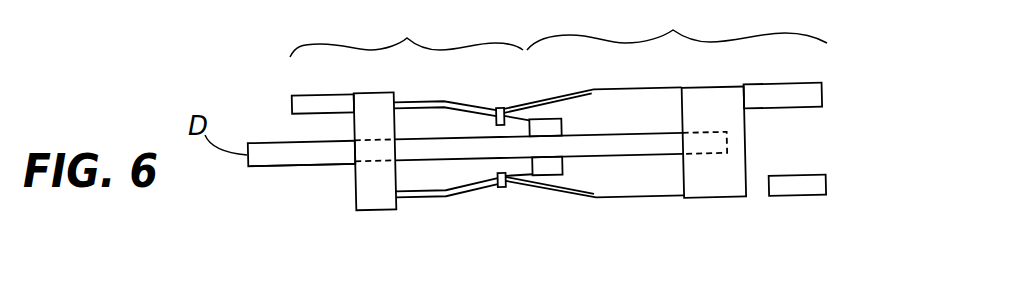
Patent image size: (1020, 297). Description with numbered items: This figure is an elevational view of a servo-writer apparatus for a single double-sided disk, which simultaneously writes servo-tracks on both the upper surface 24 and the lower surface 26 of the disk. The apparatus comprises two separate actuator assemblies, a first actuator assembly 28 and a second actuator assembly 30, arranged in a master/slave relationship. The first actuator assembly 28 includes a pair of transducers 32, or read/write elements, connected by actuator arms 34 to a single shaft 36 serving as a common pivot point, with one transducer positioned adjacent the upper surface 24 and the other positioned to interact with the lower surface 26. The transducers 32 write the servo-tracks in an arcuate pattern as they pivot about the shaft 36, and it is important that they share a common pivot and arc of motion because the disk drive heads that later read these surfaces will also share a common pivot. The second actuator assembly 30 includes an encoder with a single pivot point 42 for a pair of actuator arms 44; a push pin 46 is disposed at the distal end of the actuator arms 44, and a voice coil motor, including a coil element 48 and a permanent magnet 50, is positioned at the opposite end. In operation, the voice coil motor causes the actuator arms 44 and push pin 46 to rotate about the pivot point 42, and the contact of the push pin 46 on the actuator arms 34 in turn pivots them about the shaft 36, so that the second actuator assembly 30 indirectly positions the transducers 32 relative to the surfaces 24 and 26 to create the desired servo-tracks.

The upper surface 24 is at (262, 140).
The lower surface 26 is at (270, 167).
The first actuator assembly 28 is at (406, 33).
The second actuator assembly 30 is at (677, 25).
The transducers 32 is at (553, 127).
The actuator arms 34 is at (413, 100).
The shaft 36 is at (375, 197).
The pivot point 42 is at (710, 190).
The actuator arms 44 is at (650, 85).
The push pin 46 is at (497, 107).
The coil element 48 is at (818, 98).
The permanent magnet 50 is at (818, 185).